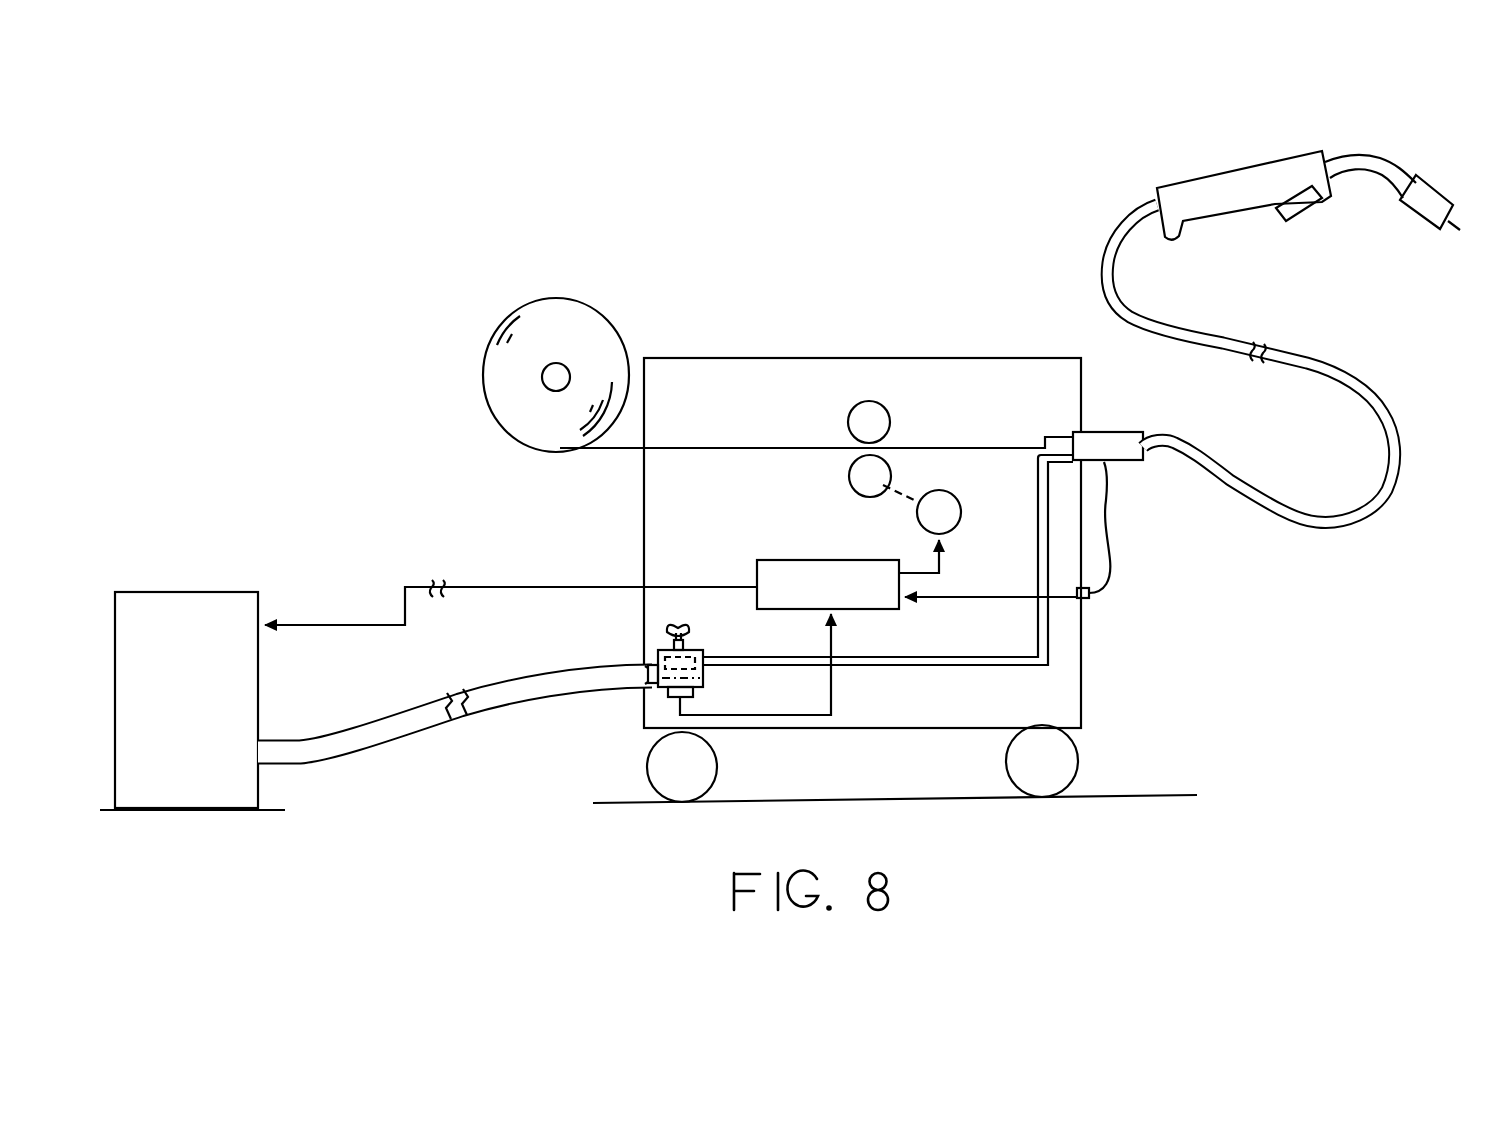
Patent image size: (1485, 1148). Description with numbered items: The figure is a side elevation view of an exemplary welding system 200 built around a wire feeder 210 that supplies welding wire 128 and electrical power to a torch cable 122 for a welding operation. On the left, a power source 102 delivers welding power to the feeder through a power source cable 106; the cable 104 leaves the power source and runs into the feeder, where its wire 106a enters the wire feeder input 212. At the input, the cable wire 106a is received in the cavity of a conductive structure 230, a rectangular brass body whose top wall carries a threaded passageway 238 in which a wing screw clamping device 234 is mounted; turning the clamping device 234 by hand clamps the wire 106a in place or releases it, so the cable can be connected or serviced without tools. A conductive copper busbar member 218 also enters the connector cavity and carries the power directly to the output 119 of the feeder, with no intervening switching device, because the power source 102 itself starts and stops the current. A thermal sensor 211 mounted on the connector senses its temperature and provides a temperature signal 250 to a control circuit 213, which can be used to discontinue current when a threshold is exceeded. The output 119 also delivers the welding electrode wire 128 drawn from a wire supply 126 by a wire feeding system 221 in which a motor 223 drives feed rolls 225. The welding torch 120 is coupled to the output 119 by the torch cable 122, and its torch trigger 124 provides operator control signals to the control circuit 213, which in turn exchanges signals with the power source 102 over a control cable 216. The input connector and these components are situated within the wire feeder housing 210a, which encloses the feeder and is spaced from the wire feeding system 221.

The power source 102 is at (160, 592).
The power cable 104 is at (455, 728).
The power source cable 106 is at (488, 715).
The wire of power source cable 106a is at (650, 695).
The output 119 is at (1096, 428).
The welding torch 120 is at (1308, 183).
The torch cable 122 is at (1373, 379).
The torch trigger 124 is at (1298, 214).
The wire supply 126 is at (559, 298).
The welding wire 128 is at (612, 452).
The welding system 200 is at (864, 166).
The wire feeder 210 is at (921, 352).
The wire feeder housing 210a is at (790, 357).
The thermal sensor 211 is at (649, 695).
The wire feeder input 212 is at (622, 634).
The control circuit 213 is at (810, 560).
The control cable 216 is at (505, 587).
The conductive busbar member 218 is at (1050, 637).
The wire feeding system 221 is at (906, 436).
The motor 223 is at (960, 504).
The feed rolls 225 is at (852, 468).
The conductive structure 230 is at (656, 671).
The wing screw clamping device 234 is at (686, 626).
The threaded passageway 238 is at (690, 660).
The temperature signal 250 is at (833, 698).